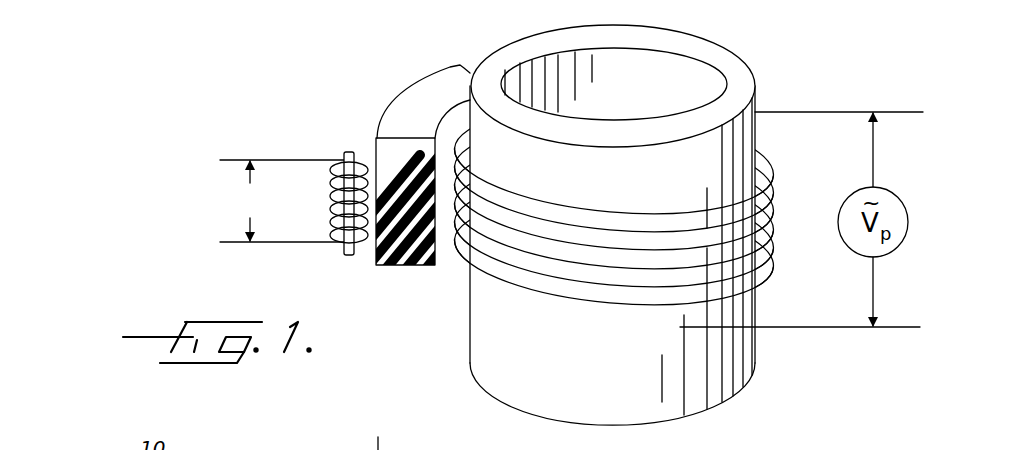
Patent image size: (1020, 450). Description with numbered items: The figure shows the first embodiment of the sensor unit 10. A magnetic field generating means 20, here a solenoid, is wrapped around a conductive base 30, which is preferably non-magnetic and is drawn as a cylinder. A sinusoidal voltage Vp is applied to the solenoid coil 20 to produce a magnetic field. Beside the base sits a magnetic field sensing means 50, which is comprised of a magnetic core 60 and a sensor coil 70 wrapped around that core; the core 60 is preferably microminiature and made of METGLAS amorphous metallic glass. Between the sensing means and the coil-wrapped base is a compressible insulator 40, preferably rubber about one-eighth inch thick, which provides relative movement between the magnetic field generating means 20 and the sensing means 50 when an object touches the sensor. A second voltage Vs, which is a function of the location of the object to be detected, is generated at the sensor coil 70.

The sensor unit 10 is at (427, 52).
The magnetic field generating means 20 is at (460, 275).
The conductive base 30 is at (738, 57).
The compressible insulator 40 is at (398, 107).
The magnetic field sensing means 50 is at (340, 150).
The magnetic core 60 is at (344, 252).
The sensor coil 70 is at (332, 180).